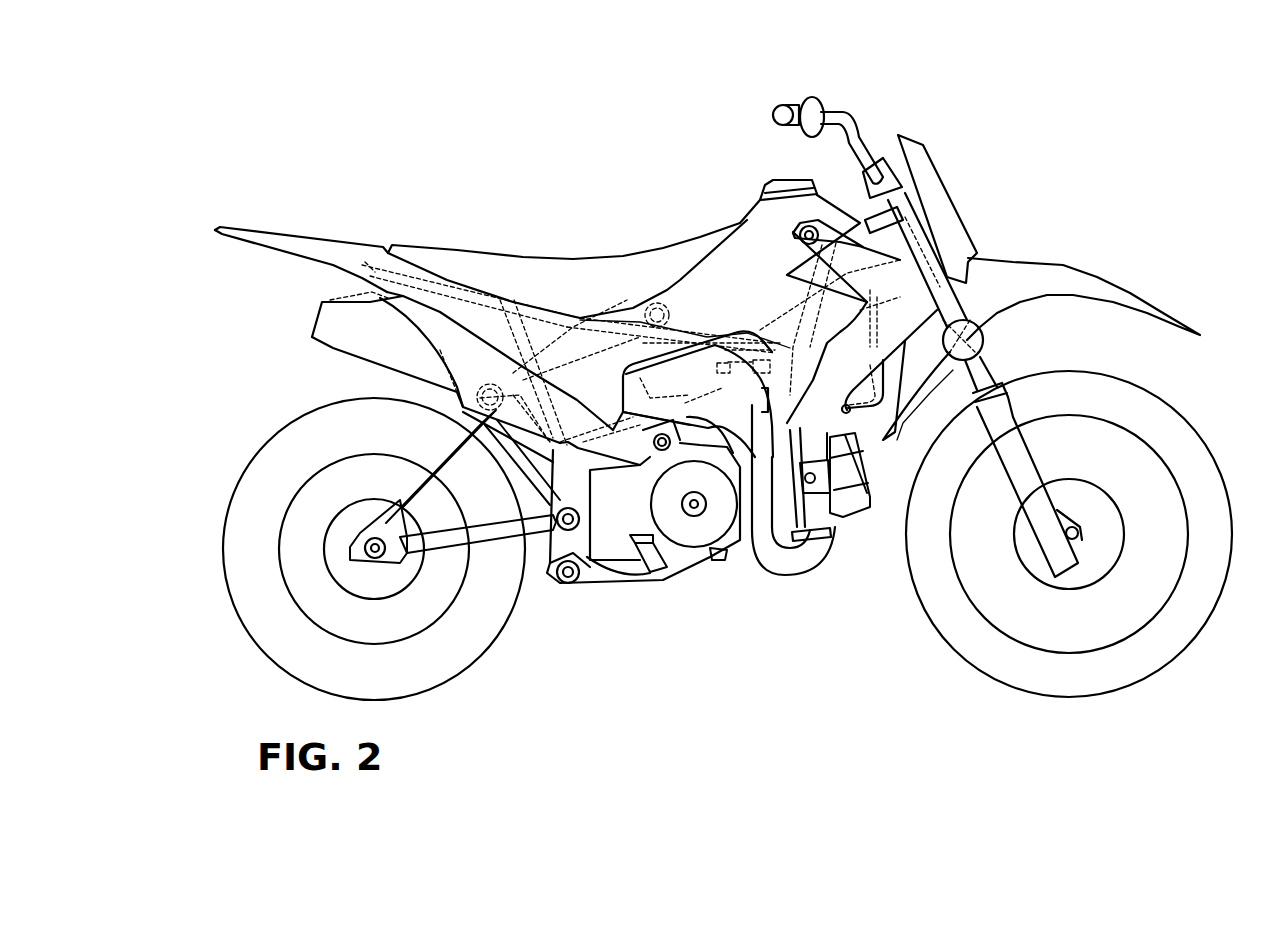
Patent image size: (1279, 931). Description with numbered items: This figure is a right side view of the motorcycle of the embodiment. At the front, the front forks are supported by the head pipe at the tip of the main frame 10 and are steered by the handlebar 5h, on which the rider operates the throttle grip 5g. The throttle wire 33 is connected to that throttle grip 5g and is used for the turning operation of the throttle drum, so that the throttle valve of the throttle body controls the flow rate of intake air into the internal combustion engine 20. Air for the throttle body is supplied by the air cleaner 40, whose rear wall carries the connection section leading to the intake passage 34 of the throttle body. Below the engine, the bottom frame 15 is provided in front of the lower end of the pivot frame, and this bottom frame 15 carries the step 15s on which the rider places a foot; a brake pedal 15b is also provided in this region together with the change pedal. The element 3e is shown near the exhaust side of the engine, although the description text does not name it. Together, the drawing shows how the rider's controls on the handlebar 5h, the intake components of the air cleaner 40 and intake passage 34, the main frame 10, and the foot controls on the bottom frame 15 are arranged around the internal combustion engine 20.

The throttle grip 5g is at (784, 103).
The handlebar 5h is at (853, 117).
The main frame 10 is at (683, 370).
The throttle wire 33 is at (733, 377).
The intake passage 34 is at (657, 393).
The bottom frame 15 is at (620, 563).
The step 15s is at (643, 543).
The brake pedal 15b is at (720, 573).
The exhaust pipe 3e is at (810, 563).
The internal combustion engine 20 is at (837, 513).
The air cleaner 40 is at (871, 392).